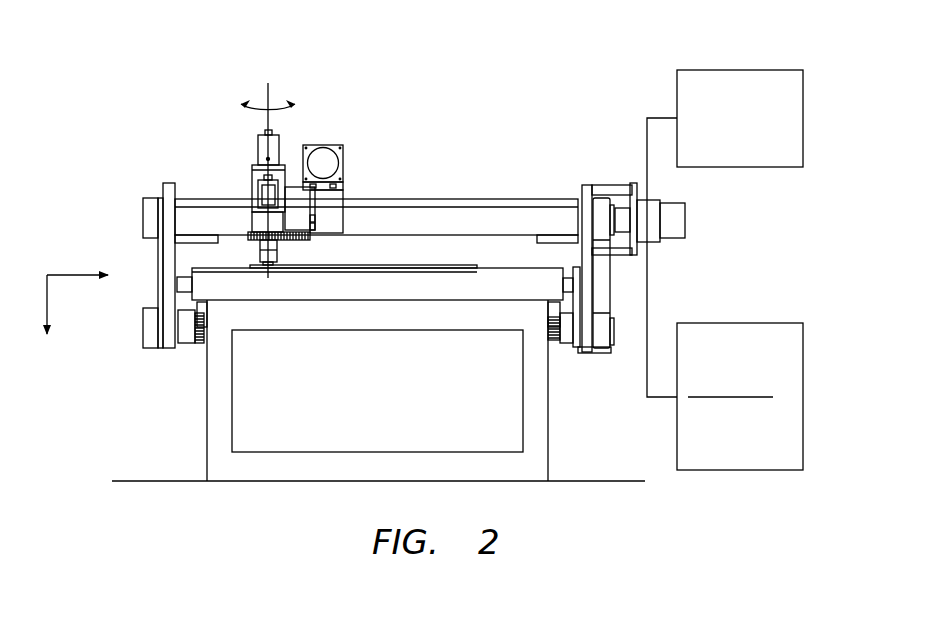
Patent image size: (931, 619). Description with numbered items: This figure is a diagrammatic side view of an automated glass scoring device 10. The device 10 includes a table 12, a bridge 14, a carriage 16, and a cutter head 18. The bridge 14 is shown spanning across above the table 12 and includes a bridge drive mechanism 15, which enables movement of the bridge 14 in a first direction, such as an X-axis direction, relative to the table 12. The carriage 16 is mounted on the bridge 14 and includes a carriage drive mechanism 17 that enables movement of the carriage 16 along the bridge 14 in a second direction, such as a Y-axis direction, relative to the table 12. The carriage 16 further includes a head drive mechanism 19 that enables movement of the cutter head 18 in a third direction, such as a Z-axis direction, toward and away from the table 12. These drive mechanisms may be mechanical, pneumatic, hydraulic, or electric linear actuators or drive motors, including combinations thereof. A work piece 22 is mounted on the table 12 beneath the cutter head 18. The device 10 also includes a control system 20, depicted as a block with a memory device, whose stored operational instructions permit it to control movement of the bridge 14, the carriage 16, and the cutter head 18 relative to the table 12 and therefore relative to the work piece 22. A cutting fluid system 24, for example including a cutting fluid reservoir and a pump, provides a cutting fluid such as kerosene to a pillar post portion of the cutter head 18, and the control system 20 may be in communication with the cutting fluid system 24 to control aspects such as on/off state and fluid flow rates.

The automated glass scoring device 10 is at (593, 77).
The table 12 is at (515, 268).
The bridge 14 is at (203, 212).
The bridge drive mechanism 15 is at (680, 220).
The carriage 16 is at (330, 129).
The carriage drive mechanism 17 is at (343, 160).
The cutter head 18 is at (277, 247).
The head drive mechanism 19 is at (257, 148).
The control system 20 is at (803, 360).
The work piece 22 is at (418, 267).
The cutting fluid system 24 is at (803, 100).